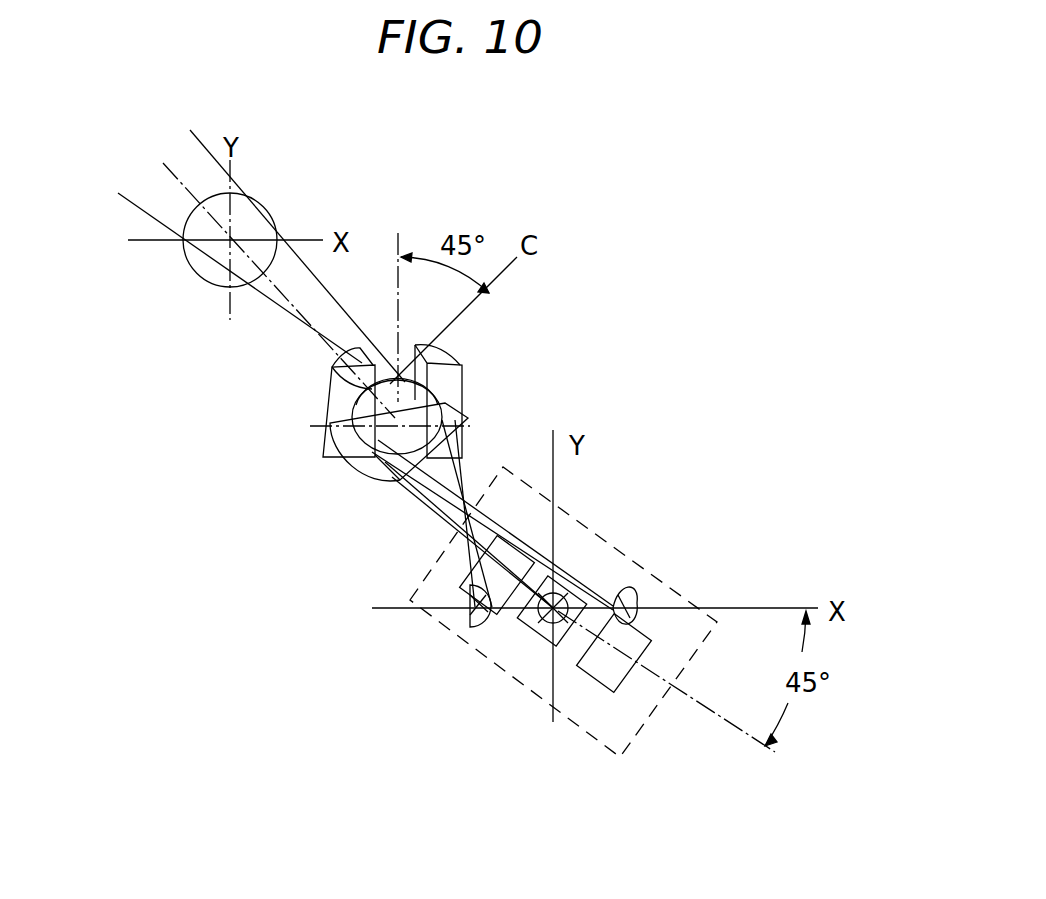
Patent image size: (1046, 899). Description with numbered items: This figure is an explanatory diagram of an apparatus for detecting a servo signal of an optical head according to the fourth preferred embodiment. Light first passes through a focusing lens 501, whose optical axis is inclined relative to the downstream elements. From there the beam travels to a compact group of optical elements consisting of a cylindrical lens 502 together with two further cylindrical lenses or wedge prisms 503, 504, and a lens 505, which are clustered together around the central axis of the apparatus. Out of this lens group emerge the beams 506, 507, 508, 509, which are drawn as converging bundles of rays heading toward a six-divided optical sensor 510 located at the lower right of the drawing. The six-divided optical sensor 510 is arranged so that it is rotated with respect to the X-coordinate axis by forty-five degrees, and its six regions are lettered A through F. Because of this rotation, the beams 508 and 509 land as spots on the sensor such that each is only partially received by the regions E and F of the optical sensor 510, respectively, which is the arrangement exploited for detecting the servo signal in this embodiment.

The focusing lens 501 is at (247, 218).
The cylindrical lens 502 is at (356, 480).
The cylindrical lens or wedge prism 503 is at (336, 388).
The cylindrical lens or wedge prism 504 is at (456, 358).
The lens 505 is at (360, 353).
The beam 506 is at (432, 492).
The beam 507 is at (445, 485).
The beam 508 is at (633, 590).
The beam 509 is at (472, 620).
The six-divided optical sensor 510 is at (633, 717).